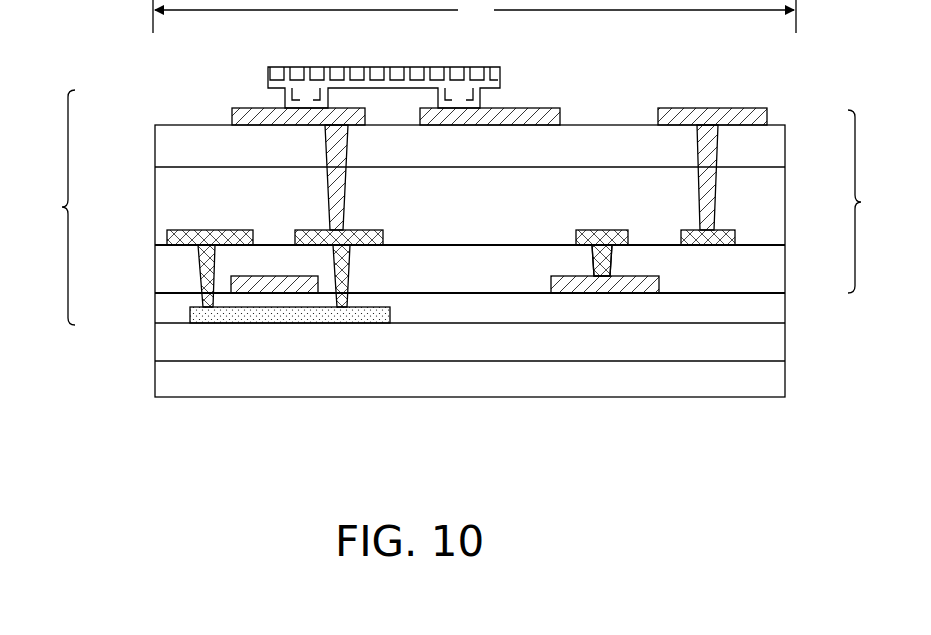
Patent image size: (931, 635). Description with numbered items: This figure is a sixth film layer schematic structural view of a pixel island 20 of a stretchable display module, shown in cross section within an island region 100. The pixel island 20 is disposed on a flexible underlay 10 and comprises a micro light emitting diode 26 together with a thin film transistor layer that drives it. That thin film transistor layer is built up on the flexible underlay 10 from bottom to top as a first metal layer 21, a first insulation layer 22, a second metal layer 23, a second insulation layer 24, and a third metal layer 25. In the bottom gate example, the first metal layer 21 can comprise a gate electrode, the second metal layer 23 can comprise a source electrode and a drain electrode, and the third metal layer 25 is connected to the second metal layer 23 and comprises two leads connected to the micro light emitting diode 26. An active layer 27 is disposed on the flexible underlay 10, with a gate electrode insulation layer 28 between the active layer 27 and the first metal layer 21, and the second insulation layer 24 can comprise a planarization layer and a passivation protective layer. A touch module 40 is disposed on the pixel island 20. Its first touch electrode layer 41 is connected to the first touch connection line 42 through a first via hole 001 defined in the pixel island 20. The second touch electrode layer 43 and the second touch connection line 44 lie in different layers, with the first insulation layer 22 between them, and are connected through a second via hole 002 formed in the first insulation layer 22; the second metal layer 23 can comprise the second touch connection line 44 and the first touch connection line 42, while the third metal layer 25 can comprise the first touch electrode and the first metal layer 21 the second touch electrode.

The island region 100 is at (474, 16).
The flexible underlay 10 is at (154, 371).
The pixel island 20 is at (56, 207).
The first metal layer 21 is at (230, 281).
The first insulation layer 22 is at (154, 258).
The second metal layer 23 is at (166, 237).
The second insulation layer 24 is at (154, 189).
The third metal layer 25 is at (231, 112).
The micro light emitting diode 26 is at (267, 74).
The active layer 27 is at (189, 313).
The gate electrode insulation layer 28 is at (154, 298).
The touch module 40 is at (867, 201).
The first touch electrode layer 41 is at (768, 116).
The first touch connection line 42 is at (737, 237).
The second touch electrode layer 43 is at (661, 284).
The second touch connection line 44 is at (630, 238).
The first via hole 001 is at (696, 190).
The second via hole 002 is at (589, 257).